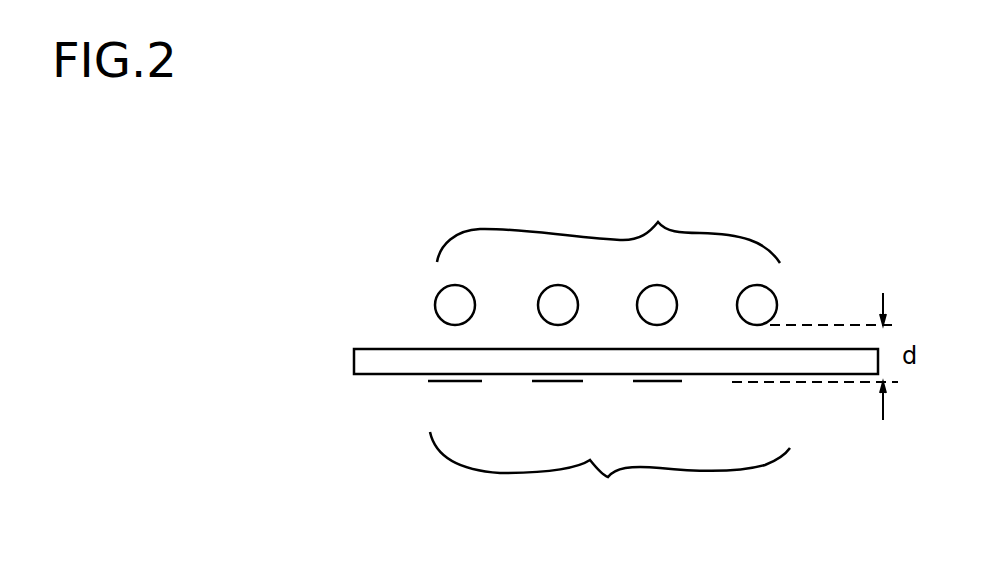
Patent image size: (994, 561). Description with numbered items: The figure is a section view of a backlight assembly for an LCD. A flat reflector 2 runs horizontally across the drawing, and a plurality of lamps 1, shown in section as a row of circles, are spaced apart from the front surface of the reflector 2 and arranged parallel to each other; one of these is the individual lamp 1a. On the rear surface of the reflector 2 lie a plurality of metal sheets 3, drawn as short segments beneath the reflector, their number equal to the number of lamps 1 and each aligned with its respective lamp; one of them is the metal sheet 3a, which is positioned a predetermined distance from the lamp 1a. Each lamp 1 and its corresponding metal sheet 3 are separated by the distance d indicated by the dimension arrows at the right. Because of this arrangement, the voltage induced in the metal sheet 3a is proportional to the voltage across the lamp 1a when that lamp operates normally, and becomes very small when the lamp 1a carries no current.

The lamps 1 is at (651, 192).
The lamp 1a is at (671, 290).
The reflector 2 is at (380, 348).
The metal sheets 3 is at (610, 481).
The metal sheet 3a is at (635, 382).